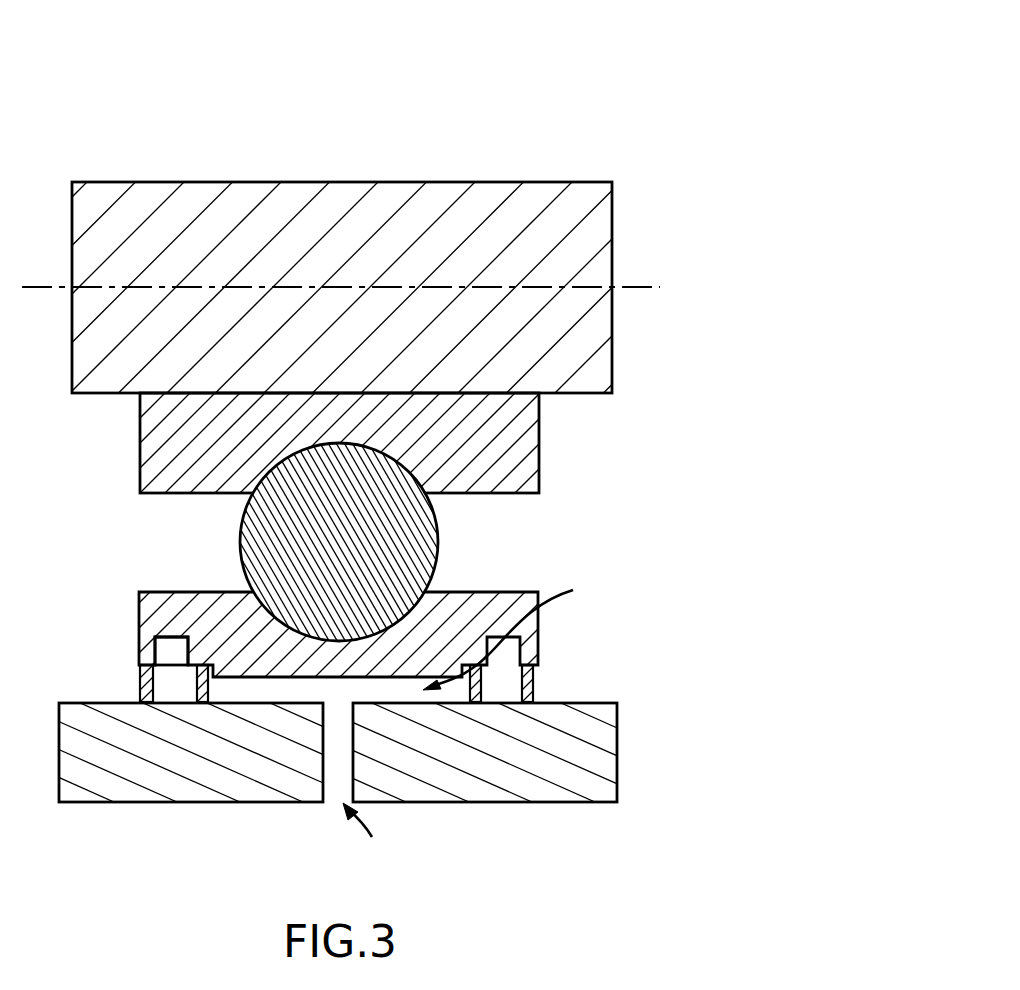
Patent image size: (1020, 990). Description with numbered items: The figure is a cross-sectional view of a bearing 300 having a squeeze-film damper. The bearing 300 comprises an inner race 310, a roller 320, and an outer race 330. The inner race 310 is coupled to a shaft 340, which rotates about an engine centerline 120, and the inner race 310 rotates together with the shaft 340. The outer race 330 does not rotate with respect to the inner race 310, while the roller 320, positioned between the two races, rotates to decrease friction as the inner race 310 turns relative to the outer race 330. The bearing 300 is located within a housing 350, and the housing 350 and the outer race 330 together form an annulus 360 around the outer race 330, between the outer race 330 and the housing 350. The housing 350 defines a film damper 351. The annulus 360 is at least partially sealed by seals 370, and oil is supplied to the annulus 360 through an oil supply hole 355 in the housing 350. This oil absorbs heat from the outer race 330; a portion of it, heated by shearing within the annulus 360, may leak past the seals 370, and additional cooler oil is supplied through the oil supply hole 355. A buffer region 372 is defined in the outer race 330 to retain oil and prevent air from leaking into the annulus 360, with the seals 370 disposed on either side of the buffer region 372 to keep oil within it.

The bearing 300 is at (597, 105).
The shaft 340 is at (612, 221).
The engine centerline 120 is at (648, 287).
The inner race 310 is at (140, 447).
The roller 320 is at (240, 535).
The outer race 330 is at (139, 612).
The buffer region 372 is at (170, 650).
The seals 370 is at (200, 677).
The annulus 360 is at (517, 633).
The film damper 351 is at (259, 703).
The oil supply hole 355 is at (365, 838).
The housing 350 is at (562, 802).